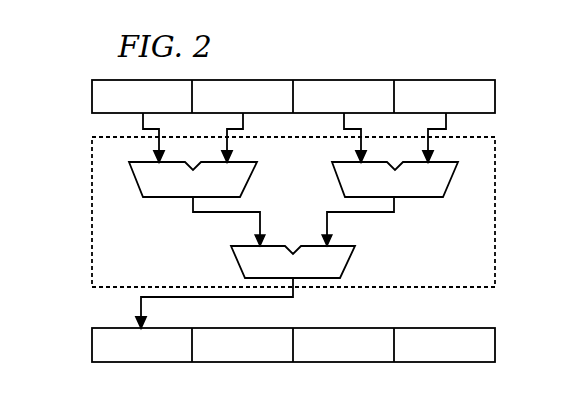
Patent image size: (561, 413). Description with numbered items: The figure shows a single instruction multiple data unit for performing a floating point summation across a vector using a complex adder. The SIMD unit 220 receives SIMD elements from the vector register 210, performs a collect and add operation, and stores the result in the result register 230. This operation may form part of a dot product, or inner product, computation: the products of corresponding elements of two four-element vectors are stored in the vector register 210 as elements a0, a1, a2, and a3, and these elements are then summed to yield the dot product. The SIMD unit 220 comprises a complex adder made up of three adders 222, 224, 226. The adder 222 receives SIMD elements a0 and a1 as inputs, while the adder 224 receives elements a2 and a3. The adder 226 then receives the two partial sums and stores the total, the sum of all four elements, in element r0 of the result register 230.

The vector register 210 is at (92, 98).
The SIMD unit 220 is at (256, 220).
The adder 222 is at (158, 198).
The adder 224 is at (430, 198).
The adder 226 is at (237, 267).
The result register 230 is at (92, 347).